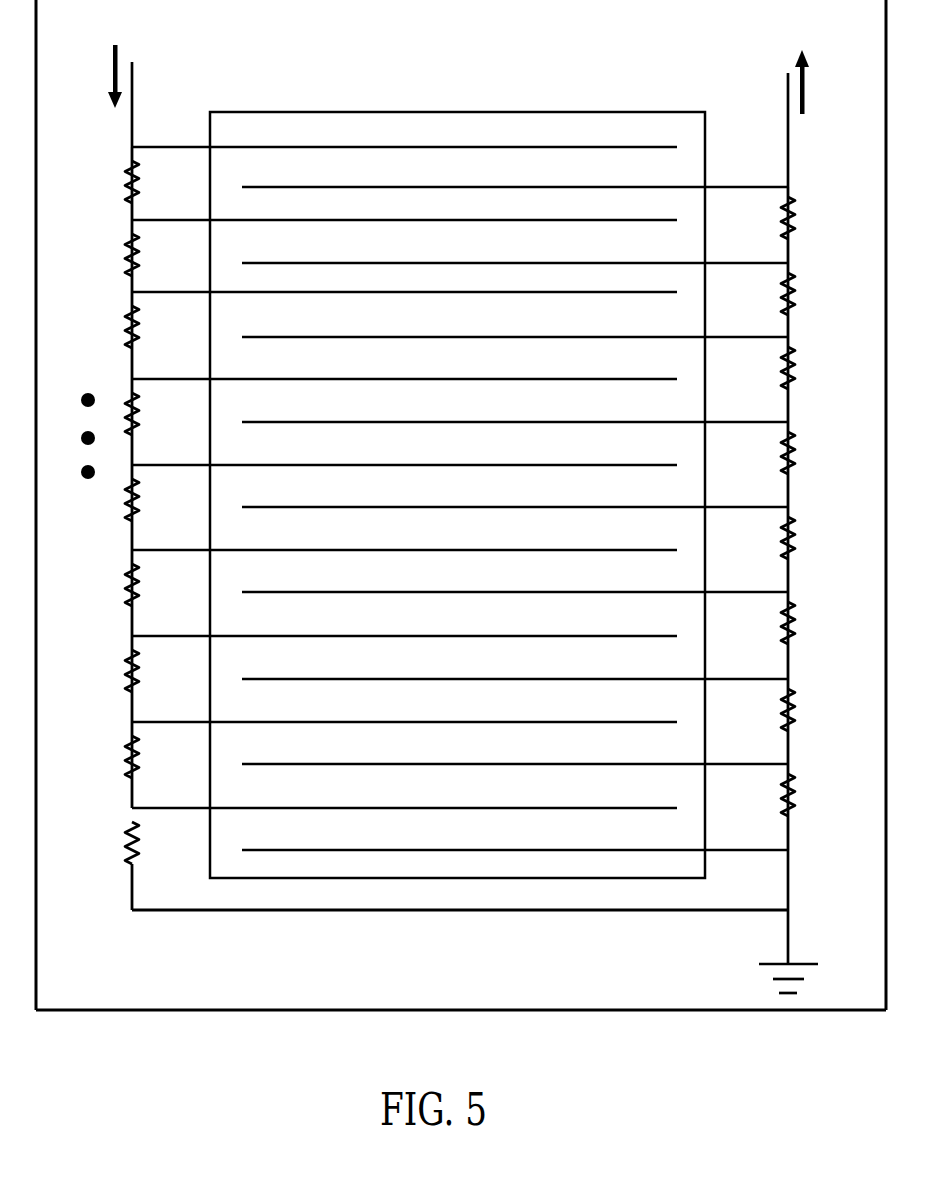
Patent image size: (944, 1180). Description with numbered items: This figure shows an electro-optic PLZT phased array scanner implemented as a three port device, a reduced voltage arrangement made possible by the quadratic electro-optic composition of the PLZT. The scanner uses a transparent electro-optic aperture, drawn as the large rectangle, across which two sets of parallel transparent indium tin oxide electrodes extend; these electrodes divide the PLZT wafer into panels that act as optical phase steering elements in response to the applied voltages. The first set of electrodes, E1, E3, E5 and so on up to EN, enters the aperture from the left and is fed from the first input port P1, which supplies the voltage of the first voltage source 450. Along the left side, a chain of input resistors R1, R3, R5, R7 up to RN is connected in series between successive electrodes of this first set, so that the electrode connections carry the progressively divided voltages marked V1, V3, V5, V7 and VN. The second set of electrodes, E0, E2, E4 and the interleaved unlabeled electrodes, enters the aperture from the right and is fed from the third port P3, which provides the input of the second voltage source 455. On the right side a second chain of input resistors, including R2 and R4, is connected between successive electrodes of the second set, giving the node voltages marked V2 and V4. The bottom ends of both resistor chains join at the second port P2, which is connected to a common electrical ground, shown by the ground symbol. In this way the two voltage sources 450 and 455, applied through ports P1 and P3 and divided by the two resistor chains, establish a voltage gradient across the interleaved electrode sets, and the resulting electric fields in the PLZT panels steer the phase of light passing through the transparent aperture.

The first voltage source 450 is at (84, 54).
The second voltage source 455 is at (827, 60).
The first input port P1 is at (163, 104).
The second port P2 is at (770, 921).
The third port P3 is at (768, 130).
The divider node voltage VN is at (143, 156).
The divider node voltage V7 is at (376, 559).
The divider node voltage V5 is at (143, 645).
The divider node voltage V3 is at (143, 731).
The divider node voltage V1 is at (143, 817).
The divider node voltage V4 is at (773, 688).
The divider node voltage V2 is at (773, 773).
The input resistor RN is at (156, 182).
The input resistor R7 is at (154, 585).
The input resistor R5 is at (154, 671).
The input resistor R3 is at (154, 757).
The input resistor R1 is at (154, 843).
The input resistor R4 is at (758, 715).
The input resistor R2 is at (758, 800).
The electrode EN is at (443, 142).
The electrode E5 is at (443, 631).
The electrode E4 is at (473, 674).
The electrode E3 is at (443, 717).
The electrode E2 is at (473, 759).
The electrode E1 is at (443, 803).
The electrode E0 is at (515, 845).